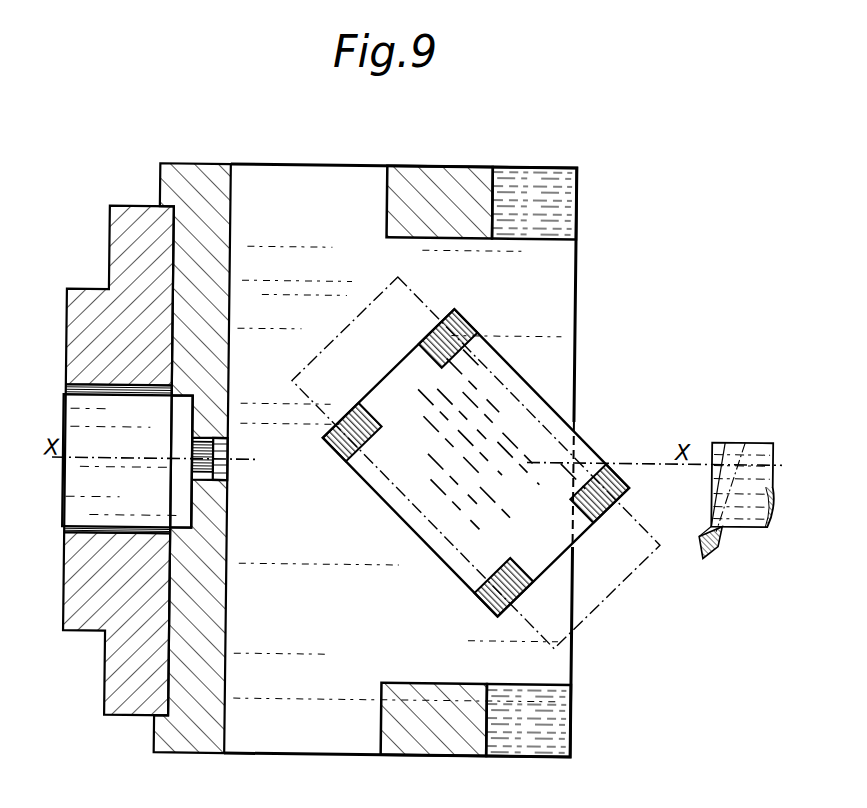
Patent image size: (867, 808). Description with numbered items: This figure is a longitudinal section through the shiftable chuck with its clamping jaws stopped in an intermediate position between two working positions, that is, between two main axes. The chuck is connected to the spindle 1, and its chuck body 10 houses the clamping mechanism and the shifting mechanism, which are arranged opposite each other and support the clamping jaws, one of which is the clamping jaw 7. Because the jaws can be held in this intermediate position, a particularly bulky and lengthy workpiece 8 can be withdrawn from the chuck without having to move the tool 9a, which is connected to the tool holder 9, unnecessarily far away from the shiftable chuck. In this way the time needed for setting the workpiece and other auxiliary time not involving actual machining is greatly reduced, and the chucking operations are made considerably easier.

The spindle 1 is at (95, 306).
The clamping jaw 7 is at (522, 386).
The workpiece 8 is at (606, 571).
The tool holder 9 is at (751, 519).
The tool 9a is at (709, 554).
The chuck body 10 is at (216, 172).